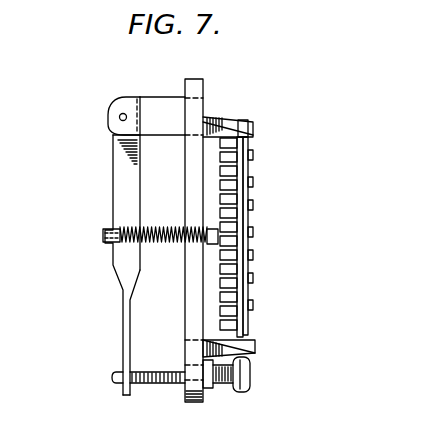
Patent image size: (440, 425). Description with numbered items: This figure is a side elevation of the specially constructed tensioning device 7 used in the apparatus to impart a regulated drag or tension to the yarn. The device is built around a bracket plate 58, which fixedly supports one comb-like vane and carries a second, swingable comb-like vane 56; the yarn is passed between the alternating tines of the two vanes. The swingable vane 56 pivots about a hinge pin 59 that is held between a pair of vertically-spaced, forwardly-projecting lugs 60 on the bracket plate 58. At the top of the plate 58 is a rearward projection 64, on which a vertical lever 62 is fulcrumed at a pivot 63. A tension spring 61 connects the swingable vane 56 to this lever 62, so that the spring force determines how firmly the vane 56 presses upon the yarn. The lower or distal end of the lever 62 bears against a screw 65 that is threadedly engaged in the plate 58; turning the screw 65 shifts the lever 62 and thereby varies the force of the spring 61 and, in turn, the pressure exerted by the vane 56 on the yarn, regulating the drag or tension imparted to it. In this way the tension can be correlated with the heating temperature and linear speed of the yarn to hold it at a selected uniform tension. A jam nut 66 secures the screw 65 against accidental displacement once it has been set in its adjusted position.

The tensioning device 7 is at (260, 161).
The comb-like vane 56 is at (236, 265).
The bracket plate 58 is at (190, 332).
The hinge pin 59 is at (245, 352).
The forwardly-projecting lugs 60 is at (223, 117).
The tension spring 61 is at (158, 226).
The vertical lever 62 is at (125, 283).
The fulcrum 63 is at (120, 117).
The rearward projection 64 is at (152, 104).
The screw 65 is at (158, 381).
The jam nut 66 is at (213, 390).